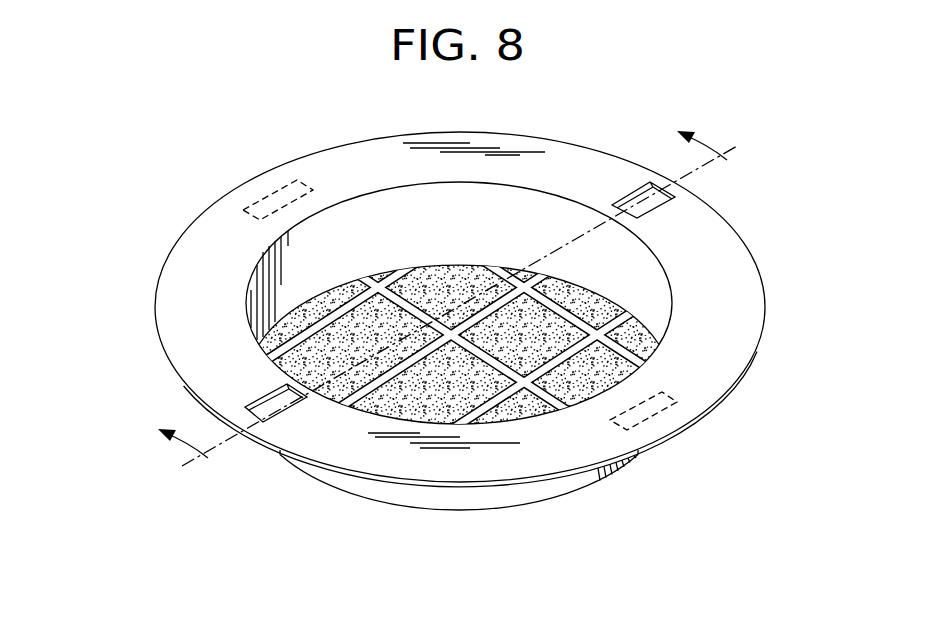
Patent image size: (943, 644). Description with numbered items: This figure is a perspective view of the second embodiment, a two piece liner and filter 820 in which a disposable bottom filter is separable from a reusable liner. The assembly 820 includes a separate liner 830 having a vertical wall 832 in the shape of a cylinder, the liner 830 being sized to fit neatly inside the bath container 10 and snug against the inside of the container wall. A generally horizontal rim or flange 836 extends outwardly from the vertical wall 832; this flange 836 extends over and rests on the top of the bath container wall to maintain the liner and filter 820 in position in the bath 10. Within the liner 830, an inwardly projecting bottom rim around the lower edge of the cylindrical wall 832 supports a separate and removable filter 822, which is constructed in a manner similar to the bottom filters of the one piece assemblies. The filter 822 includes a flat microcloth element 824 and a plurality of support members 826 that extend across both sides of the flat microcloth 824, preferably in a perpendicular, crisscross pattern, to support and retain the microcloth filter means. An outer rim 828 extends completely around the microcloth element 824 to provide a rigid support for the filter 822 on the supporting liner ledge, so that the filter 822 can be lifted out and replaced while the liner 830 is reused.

The two piece liner and filter 820 is at (243, 170).
The filter 822 is at (655, 333).
The flat microcloth element 824 is at (617, 330).
The support members 826 is at (372, 318).
The outer rim 828 is at (284, 335).
The liner 830 is at (662, 443).
The vertical wall 832 is at (531, 497).
The rim or flange 836 is at (707, 380).
The bath container 10 is at (436, 281).